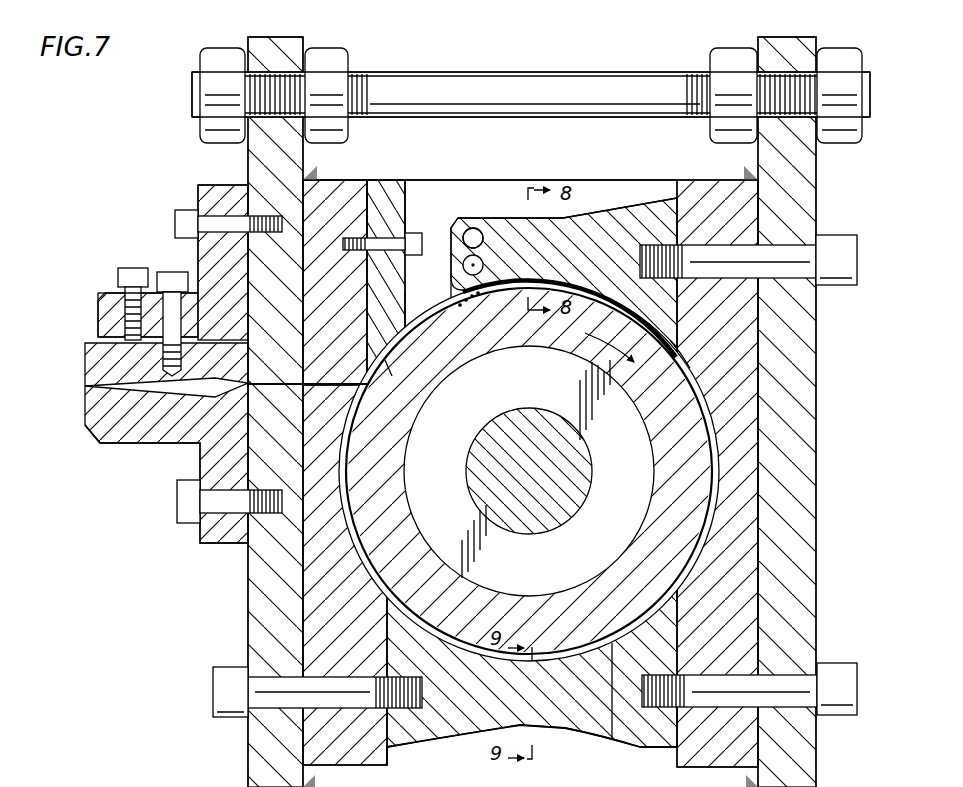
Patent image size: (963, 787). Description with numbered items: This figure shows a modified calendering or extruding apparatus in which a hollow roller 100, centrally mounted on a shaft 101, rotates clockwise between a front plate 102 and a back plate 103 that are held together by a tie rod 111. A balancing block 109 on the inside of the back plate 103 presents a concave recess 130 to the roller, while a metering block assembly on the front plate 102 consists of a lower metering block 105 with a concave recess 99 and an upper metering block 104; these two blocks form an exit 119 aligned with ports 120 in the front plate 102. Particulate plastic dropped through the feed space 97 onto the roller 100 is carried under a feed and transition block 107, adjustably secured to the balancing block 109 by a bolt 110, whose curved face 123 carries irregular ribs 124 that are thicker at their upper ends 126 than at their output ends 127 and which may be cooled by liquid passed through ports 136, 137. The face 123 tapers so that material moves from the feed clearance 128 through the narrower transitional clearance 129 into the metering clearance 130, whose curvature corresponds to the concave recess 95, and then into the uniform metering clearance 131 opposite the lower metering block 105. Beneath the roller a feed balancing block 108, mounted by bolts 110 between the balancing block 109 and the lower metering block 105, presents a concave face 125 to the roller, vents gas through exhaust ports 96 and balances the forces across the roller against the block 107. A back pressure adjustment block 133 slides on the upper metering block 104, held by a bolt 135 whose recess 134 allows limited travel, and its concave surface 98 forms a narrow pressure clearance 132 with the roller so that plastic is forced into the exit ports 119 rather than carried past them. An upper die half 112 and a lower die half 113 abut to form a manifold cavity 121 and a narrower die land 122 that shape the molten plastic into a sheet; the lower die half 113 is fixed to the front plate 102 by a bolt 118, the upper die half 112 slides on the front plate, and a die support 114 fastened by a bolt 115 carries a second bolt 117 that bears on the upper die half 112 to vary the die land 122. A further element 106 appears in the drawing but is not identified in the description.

The concave recess 95 is at (716, 478).
The exhaust ports 96 is at (617, 668).
The feed space 97 is at (432, 188).
The concave surface 98 is at (393, 332).
The concave recess 99 is at (362, 522).
The hollow roller 100 is at (457, 563).
The shaft 101 is at (518, 408).
The front plate 102 is at (248, 591).
The back plate 103 is at (817, 382).
The upper metering block 104 is at (340, 178).
The lower metering block 105 is at (320, 638).
The right housing block 106 is at (612, 180).
The feed and transition block 107 is at (522, 218).
The feed balancing block 108 is at (557, 728).
The balancing block 109 is at (748, 334).
The bolt 110 is at (837, 238).
The tie rod 111 is at (500, 71).
The upper die half 112 is at (85, 372).
The lower die half 113 is at (147, 445).
The die support 114 is at (207, 270).
The bolt 115 is at (176, 210).
The second bolt 117 is at (128, 268).
The bolt 118 is at (177, 520).
The exit ports 119 is at (350, 380).
The ports 120 is at (275, 382).
The manifold cavity 121 is at (213, 398).
The die land 122 is at (100, 443).
The face 123 is at (607, 292).
The ribs 124 is at (565, 258).
The face 125 is at (457, 645).
The upper ends 126 is at (502, 298).
The output ends 127 is at (672, 348).
The feed clearance 128 is at (518, 283).
The transitional clearance 129 is at (660, 328).
The metering clearance 130 is at (703, 400).
The metering clearance 131 is at (367, 558).
The pressure clearance 132 is at (385, 368).
The back pressure adjustment block 133 is at (338, 195).
The recess 134 is at (382, 236).
The bolt 135 is at (425, 232).
The port 136 is at (499, 246).
The port 137 is at (474, 228).